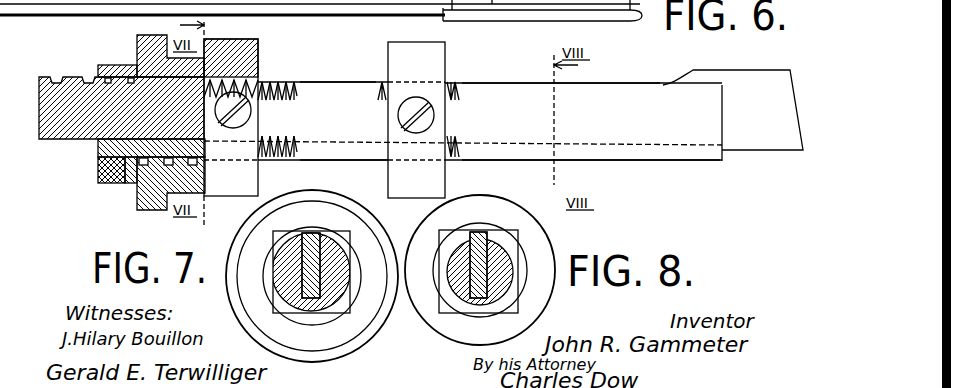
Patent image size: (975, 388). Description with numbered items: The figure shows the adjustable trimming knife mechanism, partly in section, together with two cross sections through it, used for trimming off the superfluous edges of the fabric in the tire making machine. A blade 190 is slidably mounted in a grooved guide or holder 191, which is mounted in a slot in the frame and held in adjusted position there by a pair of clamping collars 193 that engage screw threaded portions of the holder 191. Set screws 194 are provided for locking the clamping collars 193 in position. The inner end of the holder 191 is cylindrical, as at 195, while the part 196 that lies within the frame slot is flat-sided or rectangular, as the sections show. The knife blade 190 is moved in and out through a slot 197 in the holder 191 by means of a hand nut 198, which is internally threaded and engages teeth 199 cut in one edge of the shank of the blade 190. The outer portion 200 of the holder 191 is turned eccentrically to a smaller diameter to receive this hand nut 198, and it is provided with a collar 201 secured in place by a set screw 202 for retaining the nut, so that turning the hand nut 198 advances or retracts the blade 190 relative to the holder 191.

In FIG. 6, the blade 190 is at (753, 88).
In FIG. 6, the grooved guide or holder 191 is at (327, 152).
In FIG. 8, the grooved guide or holder 191 is at (452, 303).
In FIG. 6, the clamping collars 193 is at (246, 38).
In FIG. 7, the clamping collars 193 is at (258, 238).
In FIG. 8, the clamping collars 193 is at (475, 200).
In FIG. 6, the set screws 194 is at (254, 96).
In FIG. 6, the cylindrical inner end of the holder 195 is at (627, 153).
In FIG. 6, the flat-sided or rectangular part of the holder 196 is at (357, 98).
In FIG. 7, the slot in the holder 197 is at (318, 265).
In FIG. 6, the hand nut 198 is at (137, 207).
In FIG. 7, the hand nut 198 is at (277, 177).
In FIG. 6, the teeth 199 is at (78, 57).
In FIG. 6, the outer portion of the holder 200 is at (100, 156).
In FIG. 8, the outer portion of the holder 200 is at (510, 290).
In FIG. 6, the collar 201 is at (97, 174).
In FIG. 6, the set screw 202 is at (125, 185).